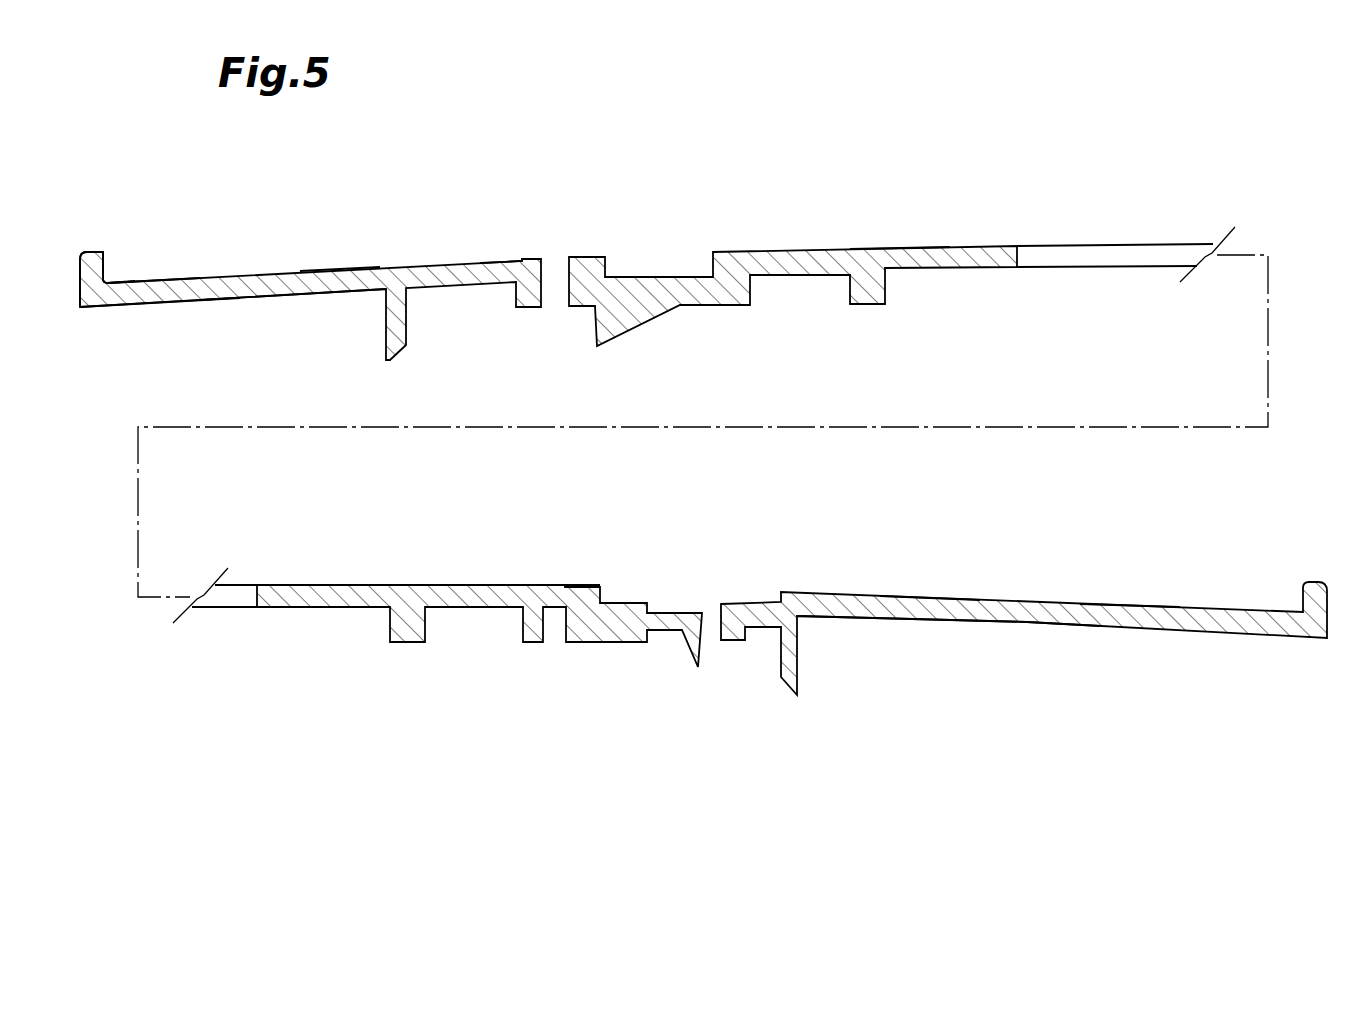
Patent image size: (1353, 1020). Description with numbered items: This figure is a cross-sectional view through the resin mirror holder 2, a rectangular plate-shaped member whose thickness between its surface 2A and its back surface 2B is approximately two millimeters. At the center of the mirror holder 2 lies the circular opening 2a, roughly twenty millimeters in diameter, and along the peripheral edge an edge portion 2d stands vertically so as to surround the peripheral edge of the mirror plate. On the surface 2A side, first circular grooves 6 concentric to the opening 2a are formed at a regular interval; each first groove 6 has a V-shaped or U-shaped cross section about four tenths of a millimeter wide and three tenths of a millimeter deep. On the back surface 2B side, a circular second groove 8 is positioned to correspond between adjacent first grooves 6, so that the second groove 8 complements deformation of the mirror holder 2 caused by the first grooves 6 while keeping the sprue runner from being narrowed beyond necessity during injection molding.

The mirror holder 2 is at (703, 397).
The surface 2A is at (132, 280).
The back surface 2B is at (178, 302).
The opening 2a is at (1083, 255).
The edge portion 2d is at (80, 275).
The first circular groove 6 is at (153, 282).
The second groove 8 is at (245, 296).